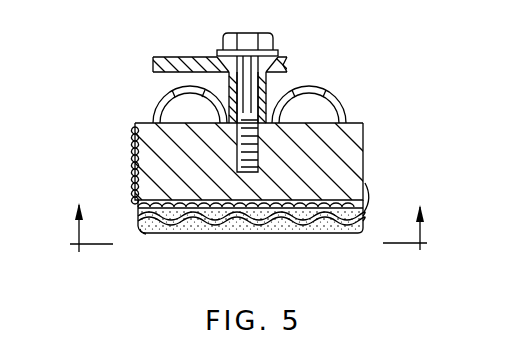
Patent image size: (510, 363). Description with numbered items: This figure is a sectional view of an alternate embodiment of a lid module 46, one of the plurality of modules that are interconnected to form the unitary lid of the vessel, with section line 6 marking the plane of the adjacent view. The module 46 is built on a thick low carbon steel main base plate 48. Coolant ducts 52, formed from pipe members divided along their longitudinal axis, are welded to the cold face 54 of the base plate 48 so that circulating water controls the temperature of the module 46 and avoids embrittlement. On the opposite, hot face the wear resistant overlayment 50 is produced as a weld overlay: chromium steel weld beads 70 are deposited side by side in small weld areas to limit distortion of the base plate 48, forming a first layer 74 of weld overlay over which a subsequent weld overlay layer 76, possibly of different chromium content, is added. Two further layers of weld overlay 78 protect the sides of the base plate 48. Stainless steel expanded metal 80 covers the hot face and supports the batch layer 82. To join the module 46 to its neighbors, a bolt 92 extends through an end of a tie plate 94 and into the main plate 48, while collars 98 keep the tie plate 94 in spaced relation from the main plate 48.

The lid module 46 is at (112, 105).
The main base plate 48 is at (352, 152).
The overlayment 50 is at (300, 236).
The duct 52 is at (345, 97).
The cold face 54 is at (352, 120).
The weld bead 70 is at (328, 198).
The layer of weld overlay 74 is at (152, 234).
The subsequent weld overlay layer 76 is at (165, 222).
The weld overlay 78 is at (134, 152).
The stainless steel expanded metal 80 is at (212, 230).
The batch layer 82 is at (262, 236).
The bolt 92 is at (258, 34).
The tie plate 94 is at (190, 57).
The collar 98 is at (270, 95).
The section line 6- 6 is at (248, 216).